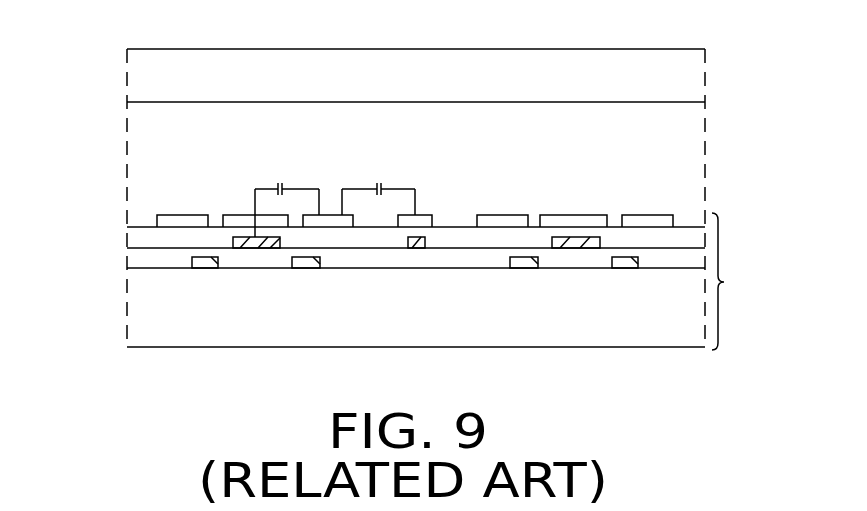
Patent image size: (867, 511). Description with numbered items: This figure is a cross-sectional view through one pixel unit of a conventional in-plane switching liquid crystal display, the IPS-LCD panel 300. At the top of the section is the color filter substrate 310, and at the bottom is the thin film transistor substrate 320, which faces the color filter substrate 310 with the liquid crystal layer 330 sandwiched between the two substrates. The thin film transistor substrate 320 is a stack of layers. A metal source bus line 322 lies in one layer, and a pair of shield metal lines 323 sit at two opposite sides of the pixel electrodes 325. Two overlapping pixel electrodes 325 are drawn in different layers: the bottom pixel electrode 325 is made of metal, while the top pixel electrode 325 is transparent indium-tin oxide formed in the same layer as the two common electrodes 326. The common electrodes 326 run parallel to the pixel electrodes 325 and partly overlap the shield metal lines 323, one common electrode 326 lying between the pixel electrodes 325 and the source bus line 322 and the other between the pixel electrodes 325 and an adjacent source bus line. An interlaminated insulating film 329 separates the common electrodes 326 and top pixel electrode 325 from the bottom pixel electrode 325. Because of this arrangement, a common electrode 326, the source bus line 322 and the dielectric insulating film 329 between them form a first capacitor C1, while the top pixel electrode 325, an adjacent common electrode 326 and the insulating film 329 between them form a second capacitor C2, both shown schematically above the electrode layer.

The IPS-LCD panel 300 is at (429, 37).
The color filter (CF) substrate 310 is at (675, 72).
The liquid crystal layer 330 is at (675, 147).
The thin film transistor (TFT) substrate 320 is at (454, 281).
The interlaminated insulating film 329 is at (138, 237).
The source bus line 322 is at (245, 247).
The shield metal line 323 is at (307, 268).
The pixel electrode 325 is at (414, 245).
The common electrode 326 is at (327, 226).
The first capacitor C1 is at (287, 195).
The second capacitor C2 is at (378, 184).